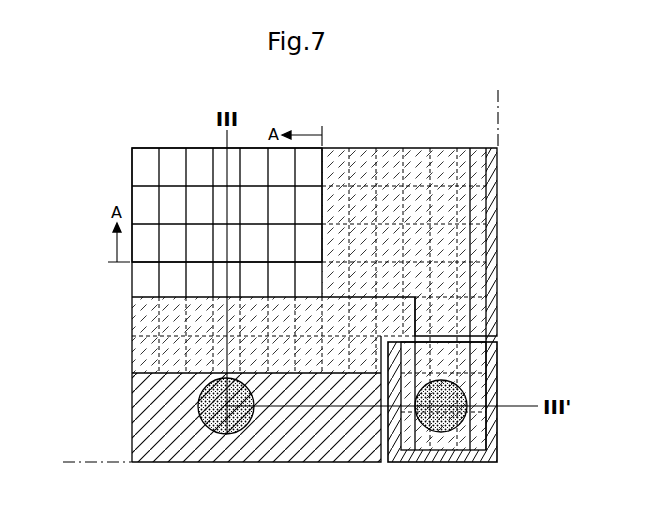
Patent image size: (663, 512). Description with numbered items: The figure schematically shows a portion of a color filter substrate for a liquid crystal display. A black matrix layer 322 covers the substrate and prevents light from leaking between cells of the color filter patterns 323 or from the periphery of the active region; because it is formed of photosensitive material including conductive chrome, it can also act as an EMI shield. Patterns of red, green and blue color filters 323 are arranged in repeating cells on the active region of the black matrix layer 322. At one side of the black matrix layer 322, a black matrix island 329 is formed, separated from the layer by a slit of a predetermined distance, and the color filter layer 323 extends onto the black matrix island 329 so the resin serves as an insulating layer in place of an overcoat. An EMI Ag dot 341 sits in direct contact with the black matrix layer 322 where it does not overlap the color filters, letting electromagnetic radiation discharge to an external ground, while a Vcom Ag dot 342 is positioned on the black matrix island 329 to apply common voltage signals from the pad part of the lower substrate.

The black matrix layer 322 is at (498, 253).
The color filter layer 323 is at (132, 150).
The black matrix island 329 is at (495, 441).
The EMI Ag dot 341 is at (227, 434).
The Vcom Ag dot 342 is at (498, 377).